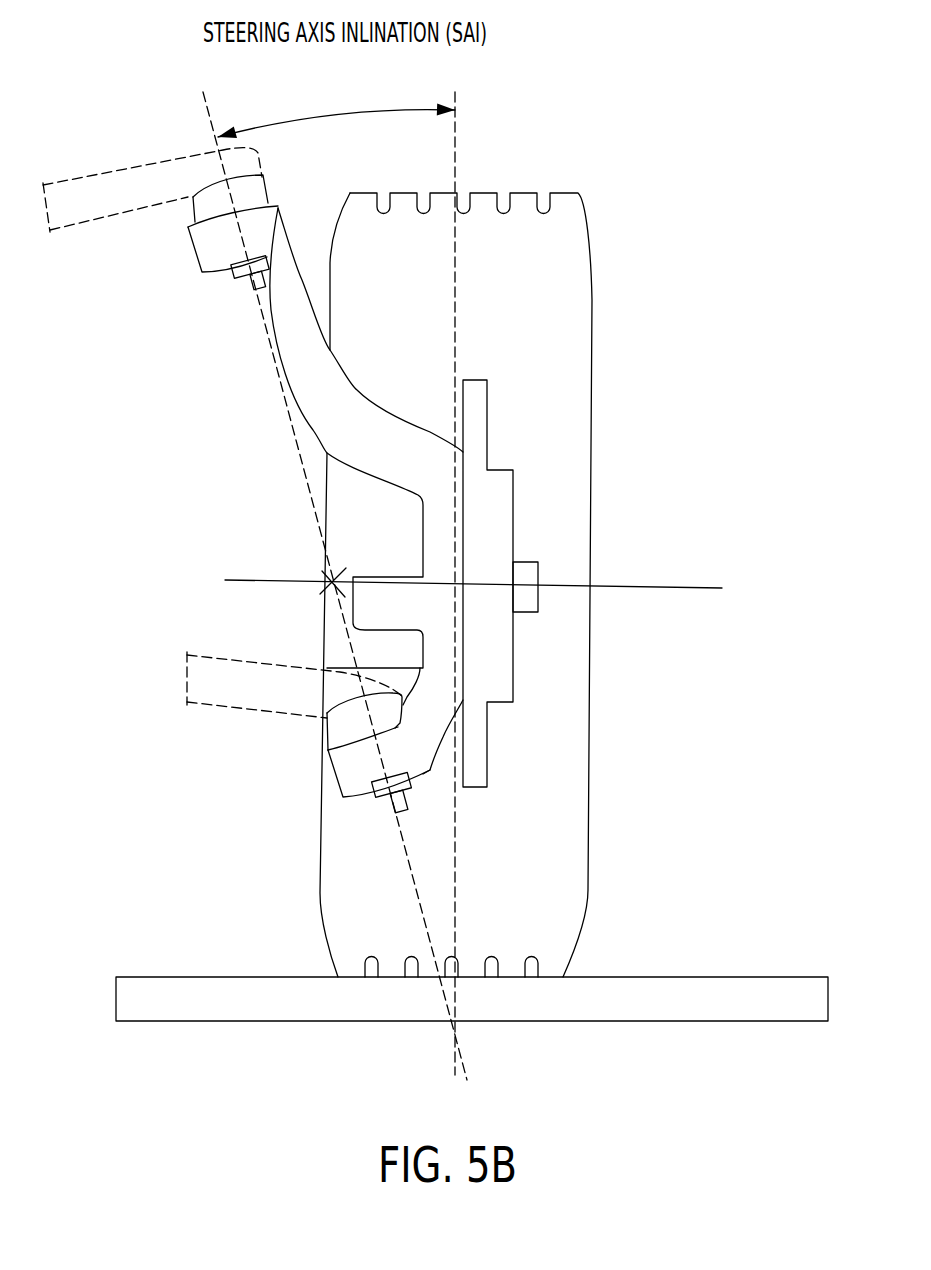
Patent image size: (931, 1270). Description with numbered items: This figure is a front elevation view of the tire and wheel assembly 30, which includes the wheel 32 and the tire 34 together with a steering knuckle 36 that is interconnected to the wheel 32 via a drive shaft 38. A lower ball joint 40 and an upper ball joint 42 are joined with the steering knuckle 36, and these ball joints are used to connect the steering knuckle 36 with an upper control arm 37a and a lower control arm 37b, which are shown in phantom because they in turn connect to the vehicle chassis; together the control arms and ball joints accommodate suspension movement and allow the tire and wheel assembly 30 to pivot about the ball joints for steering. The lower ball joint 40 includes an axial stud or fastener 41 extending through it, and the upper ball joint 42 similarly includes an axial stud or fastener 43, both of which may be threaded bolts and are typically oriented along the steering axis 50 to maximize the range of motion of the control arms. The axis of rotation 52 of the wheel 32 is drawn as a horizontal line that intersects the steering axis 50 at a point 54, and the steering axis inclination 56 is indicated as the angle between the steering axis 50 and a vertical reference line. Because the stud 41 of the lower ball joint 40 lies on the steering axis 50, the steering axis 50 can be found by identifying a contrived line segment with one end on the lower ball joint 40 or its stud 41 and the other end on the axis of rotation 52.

The tire and wheel assembly 30 is at (626, 244).
The wheel 32 is at (497, 500).
The tire 34 is at (562, 328).
The steering knuckle 36 is at (287, 270).
The upper control arm 37a is at (90, 220).
The lower control arm 37b is at (213, 707).
The drive shaft 38 is at (540, 567).
The lower ball joint 40 is at (330, 733).
The axial stud or fastener 41 is at (377, 795).
The upper ball joint 42 is at (268, 190).
The axial stud or fastener 43 is at (250, 285).
The steering axis 50 is at (277, 378).
The axis of rotation 52 is at (715, 587).
The intersection point 54 is at (327, 572).
The steering axis inclination (SAI) 56 is at (327, 118).